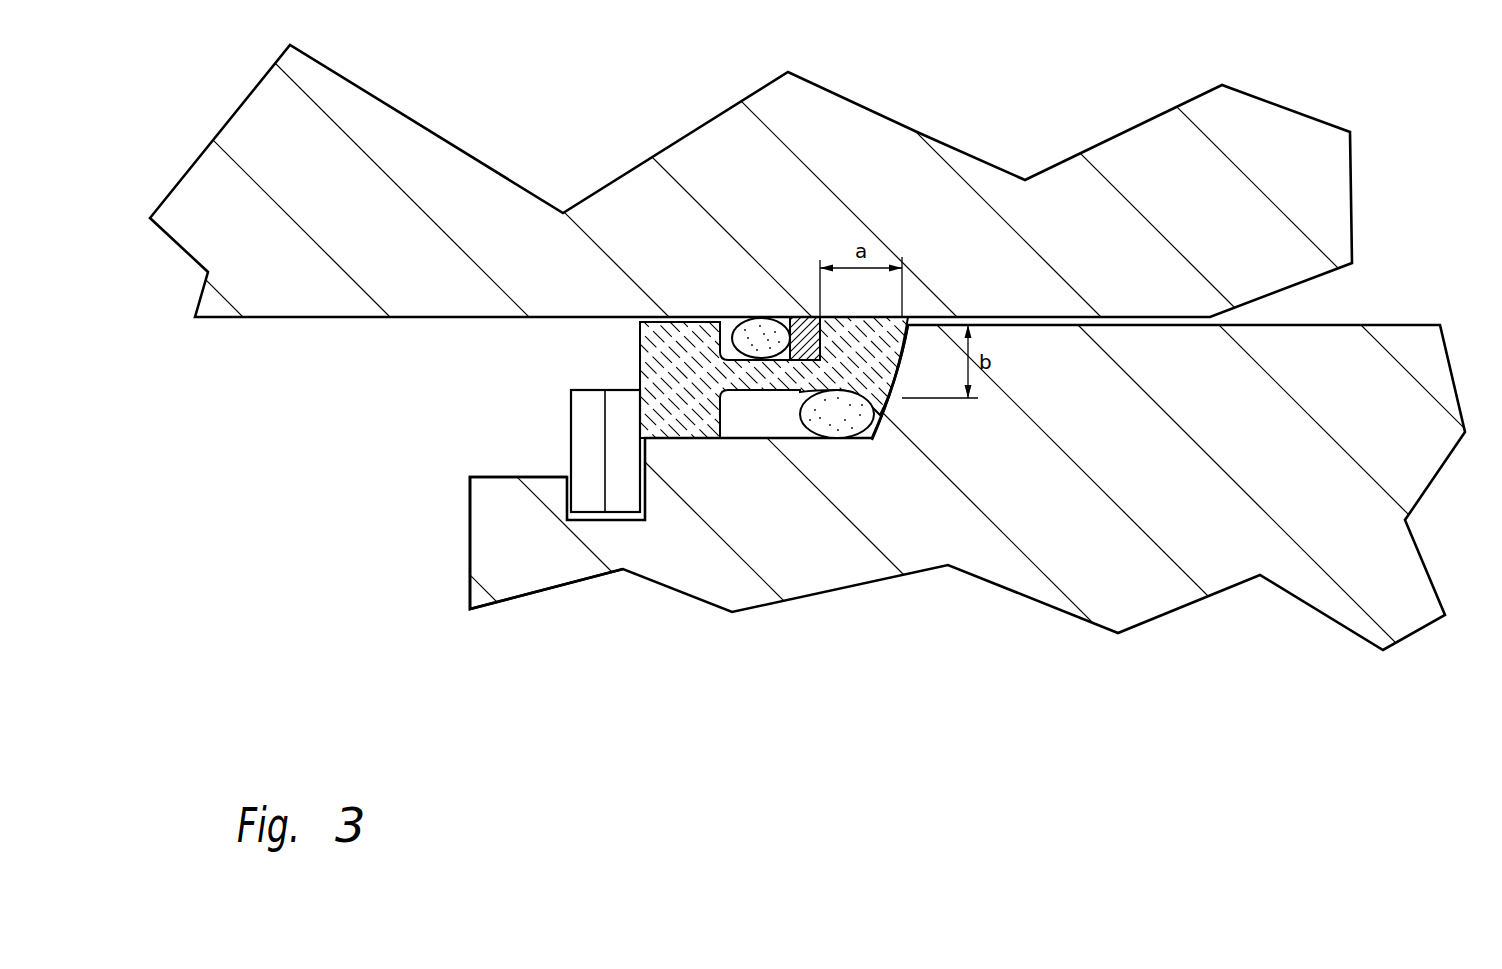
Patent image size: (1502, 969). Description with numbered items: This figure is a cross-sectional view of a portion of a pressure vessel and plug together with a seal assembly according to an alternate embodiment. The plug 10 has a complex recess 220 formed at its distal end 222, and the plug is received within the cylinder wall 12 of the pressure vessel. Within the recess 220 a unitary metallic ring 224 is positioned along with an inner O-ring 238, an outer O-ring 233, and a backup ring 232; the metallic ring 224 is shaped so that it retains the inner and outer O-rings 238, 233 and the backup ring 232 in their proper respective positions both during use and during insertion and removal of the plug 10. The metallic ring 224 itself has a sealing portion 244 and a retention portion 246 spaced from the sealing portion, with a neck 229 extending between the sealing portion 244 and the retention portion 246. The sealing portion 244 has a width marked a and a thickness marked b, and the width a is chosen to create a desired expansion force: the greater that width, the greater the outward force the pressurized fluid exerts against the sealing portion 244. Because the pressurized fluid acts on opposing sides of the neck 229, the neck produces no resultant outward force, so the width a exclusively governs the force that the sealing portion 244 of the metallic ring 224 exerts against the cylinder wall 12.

The plug 10 is at (1452, 365).
The cylinder wall 12 is at (1330, 172).
The complex recess 220 is at (497, 477).
The distal end 222 is at (497, 537).
The metallic ring 224 is at (790, 392).
The neck 229 is at (760, 382).
The backup ring 232 is at (813, 317).
The outer O-ring 233 is at (740, 318).
The inner O-ring 238 is at (883, 414).
The sealing portion 244 is at (888, 330).
The retention portion 246 is at (639, 318).